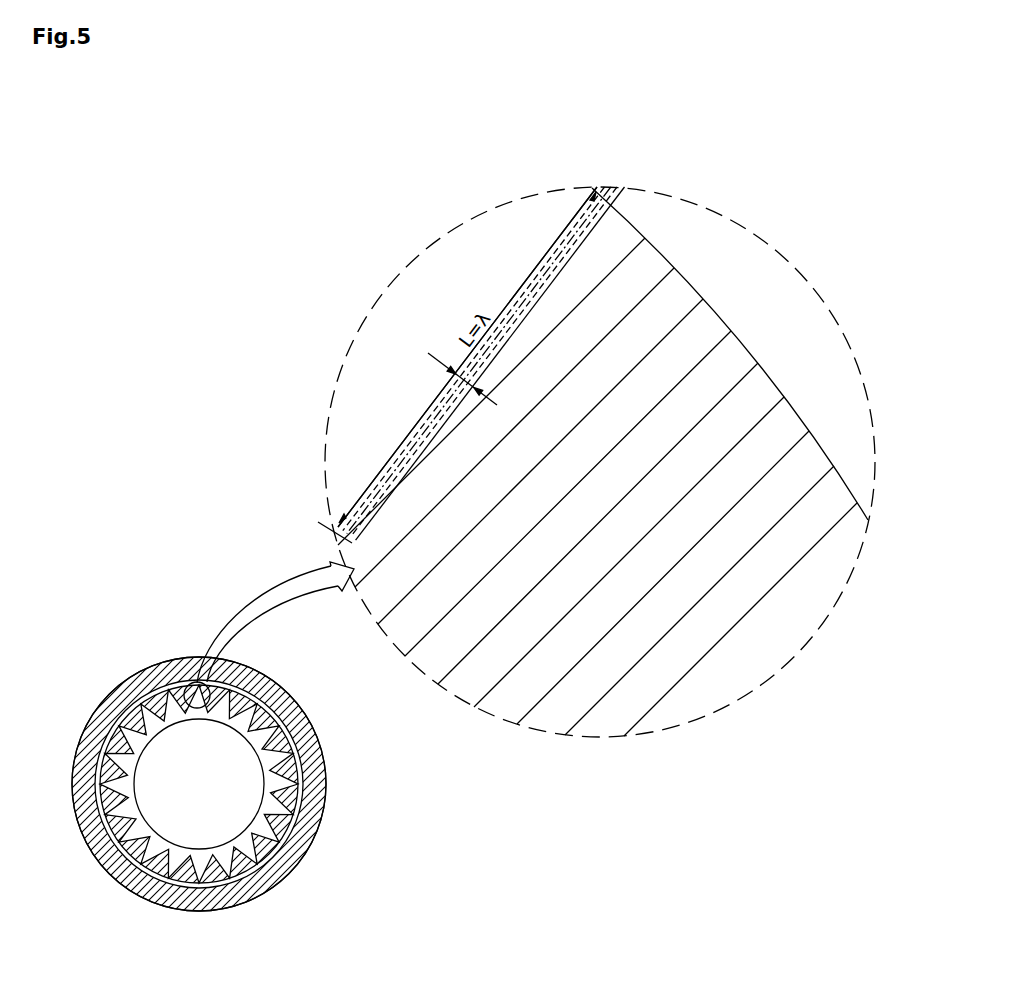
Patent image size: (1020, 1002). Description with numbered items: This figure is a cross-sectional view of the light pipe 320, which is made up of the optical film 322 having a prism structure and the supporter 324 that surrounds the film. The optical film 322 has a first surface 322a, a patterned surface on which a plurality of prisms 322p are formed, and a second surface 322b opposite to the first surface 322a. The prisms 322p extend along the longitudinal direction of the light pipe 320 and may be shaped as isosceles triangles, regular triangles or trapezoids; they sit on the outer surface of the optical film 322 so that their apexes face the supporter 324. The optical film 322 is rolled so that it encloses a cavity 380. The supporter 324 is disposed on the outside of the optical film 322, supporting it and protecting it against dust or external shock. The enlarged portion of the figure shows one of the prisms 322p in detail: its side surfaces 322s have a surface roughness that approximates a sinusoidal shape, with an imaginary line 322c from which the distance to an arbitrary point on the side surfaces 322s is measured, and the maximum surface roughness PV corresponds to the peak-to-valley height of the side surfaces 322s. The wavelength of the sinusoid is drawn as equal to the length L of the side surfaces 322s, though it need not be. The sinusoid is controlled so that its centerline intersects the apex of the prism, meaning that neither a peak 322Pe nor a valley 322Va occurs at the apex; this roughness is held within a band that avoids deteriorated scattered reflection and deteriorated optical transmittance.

The light pipe 320 is at (122, 533).
The optical film 322 is at (228, 856).
The first surface 322a is at (245, 850).
The second surface 322b is at (230, 852).
The imaginary line 322c is at (568, 254).
The prisms 322p is at (183, 681).
The side surfaces 322s is at (372, 491).
The peak 322Pe is at (407, 445).
The valley 322Va is at (537, 290).
The supporter 324 is at (304, 733).
The cavity 380 is at (222, 793).
The maximum surface roughness PV is at (453, 391).